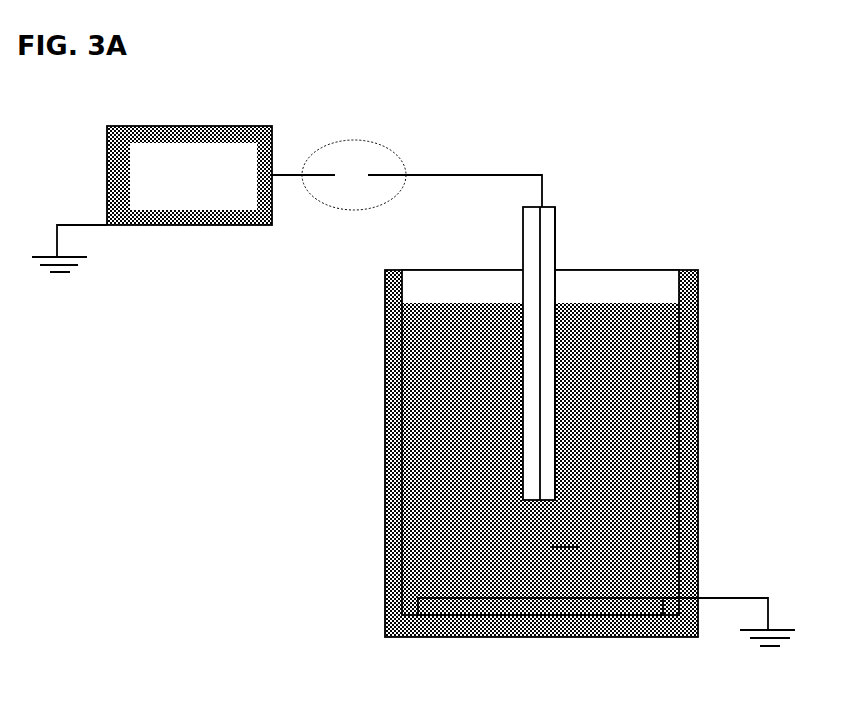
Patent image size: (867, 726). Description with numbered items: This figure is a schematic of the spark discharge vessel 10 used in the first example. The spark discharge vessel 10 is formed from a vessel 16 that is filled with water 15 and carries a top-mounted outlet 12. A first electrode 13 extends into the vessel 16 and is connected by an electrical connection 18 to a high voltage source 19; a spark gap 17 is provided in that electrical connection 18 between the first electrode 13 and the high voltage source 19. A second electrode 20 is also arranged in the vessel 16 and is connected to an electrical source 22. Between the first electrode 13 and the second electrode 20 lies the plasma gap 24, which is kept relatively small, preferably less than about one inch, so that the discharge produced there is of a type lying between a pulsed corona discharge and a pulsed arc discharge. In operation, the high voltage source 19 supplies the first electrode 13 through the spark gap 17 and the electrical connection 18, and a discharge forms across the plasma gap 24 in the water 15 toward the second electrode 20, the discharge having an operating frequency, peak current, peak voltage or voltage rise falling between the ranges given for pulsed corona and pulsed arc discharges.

The spark discharge vessel 10 is at (604, 399).
The top-mounted outlet 12 is at (547, 208).
The first electrode 13 is at (543, 253).
The water 15 is at (640, 500).
The vessel 16 is at (690, 425).
The spark gap 17 is at (352, 182).
The electrical connection 18 is at (445, 175).
The high voltage source 19 is at (187, 225).
The second electrode 20 is at (557, 598).
The electrical source 22 is at (740, 642).
The plasma gap 24 is at (590, 545).